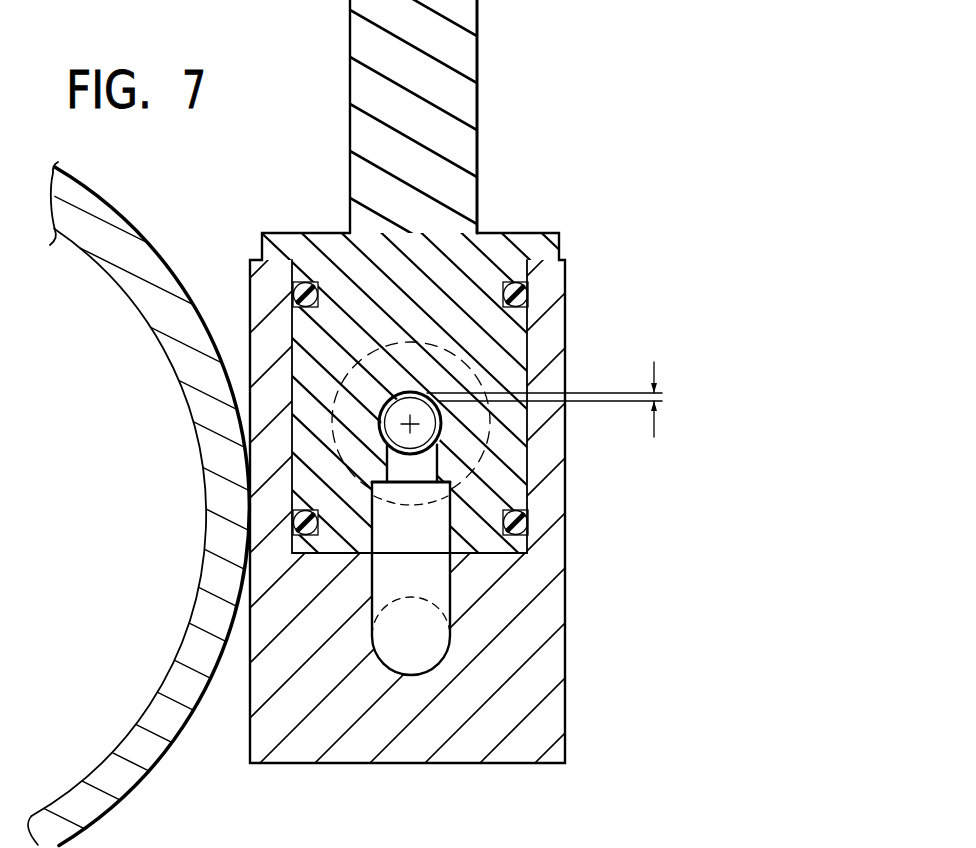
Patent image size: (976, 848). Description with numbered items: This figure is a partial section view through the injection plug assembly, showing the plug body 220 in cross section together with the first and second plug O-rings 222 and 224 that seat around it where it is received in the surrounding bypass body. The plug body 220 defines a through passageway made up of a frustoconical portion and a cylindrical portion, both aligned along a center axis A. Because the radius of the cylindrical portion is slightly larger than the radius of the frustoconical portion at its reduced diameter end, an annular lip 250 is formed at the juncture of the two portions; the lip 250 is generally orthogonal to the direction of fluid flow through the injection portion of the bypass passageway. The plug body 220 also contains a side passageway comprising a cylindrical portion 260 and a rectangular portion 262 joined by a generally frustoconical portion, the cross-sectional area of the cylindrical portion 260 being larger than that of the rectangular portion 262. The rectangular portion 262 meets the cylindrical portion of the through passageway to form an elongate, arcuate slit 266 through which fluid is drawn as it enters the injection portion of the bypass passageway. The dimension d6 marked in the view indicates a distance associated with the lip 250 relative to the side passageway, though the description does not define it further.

The plug body 220 is at (482, 90).
The first plug O-ring 222 is at (532, 293).
The second plug O-ring 224 is at (293, 521).
The annular lip 250 is at (440, 410).
The center axis A is at (412, 426).
The rectangular portion 262 is at (393, 467).
The arcuate slit 266 is at (443, 478).
The cylindrical portion 260 is at (420, 535).
The distance d6 is at (546, 383).